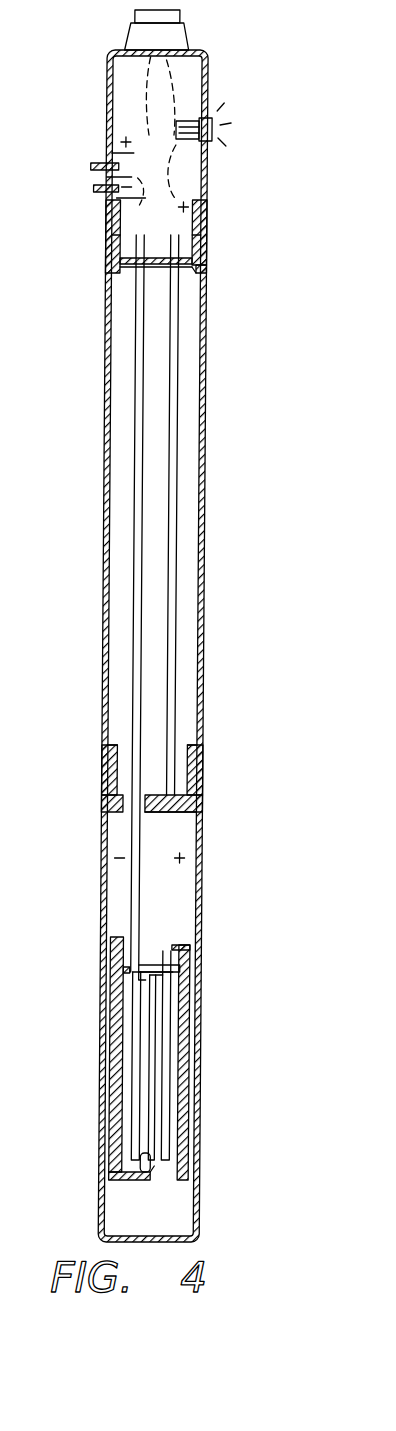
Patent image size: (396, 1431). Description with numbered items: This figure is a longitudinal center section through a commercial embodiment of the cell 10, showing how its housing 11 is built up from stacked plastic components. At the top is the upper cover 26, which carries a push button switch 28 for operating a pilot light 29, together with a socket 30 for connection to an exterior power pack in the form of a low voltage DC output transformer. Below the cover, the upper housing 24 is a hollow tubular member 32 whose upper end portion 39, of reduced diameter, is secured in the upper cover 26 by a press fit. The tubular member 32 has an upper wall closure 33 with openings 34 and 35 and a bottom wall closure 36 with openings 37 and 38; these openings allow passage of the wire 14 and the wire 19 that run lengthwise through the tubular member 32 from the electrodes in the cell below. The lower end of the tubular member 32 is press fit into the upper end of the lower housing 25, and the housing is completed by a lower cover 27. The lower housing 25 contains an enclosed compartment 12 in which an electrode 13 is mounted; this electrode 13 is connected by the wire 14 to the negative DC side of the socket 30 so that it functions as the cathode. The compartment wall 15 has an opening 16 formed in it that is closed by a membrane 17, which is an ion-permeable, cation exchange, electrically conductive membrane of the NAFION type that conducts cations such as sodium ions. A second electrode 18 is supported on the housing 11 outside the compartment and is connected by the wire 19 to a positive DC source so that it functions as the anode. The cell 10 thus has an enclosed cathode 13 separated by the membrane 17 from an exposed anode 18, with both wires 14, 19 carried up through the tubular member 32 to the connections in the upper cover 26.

The cell 10 is at (5, 697).
The housing 11 is at (4, 557).
The enclosed compartment 12 is at (131, 1050).
The electrode 13 is at (148, 1107).
The wire 14 is at (137, 408).
The compartment wall 15 is at (159, 1170).
The opening 16 is at (156, 1178).
The membrane 17 is at (149, 1023).
The electrode 18 is at (178, 1055).
The wire 19 is at (181, 468).
The upper housing 24 is at (210, 655).
The lower housing 25 is at (207, 857).
The upper cover 26 is at (108, 70).
The lower cover 27 is at (205, 1100).
The push button switch 28 is at (135, 17).
The pilot light 29 is at (0, 134).
The socket 30 is at (101, 146).
The hollow tubular member 32 is at (96, 373).
The upper wall closure 33 is at (133, 262).
The opening 34 is at (124, 272).
The opening 35 is at (195, 270).
The bottom wall closure 36 is at (208, 790).
The opening 37 is at (119, 798).
The opening 38 is at (173, 807).
The upper end portion 39 is at (118, 224).